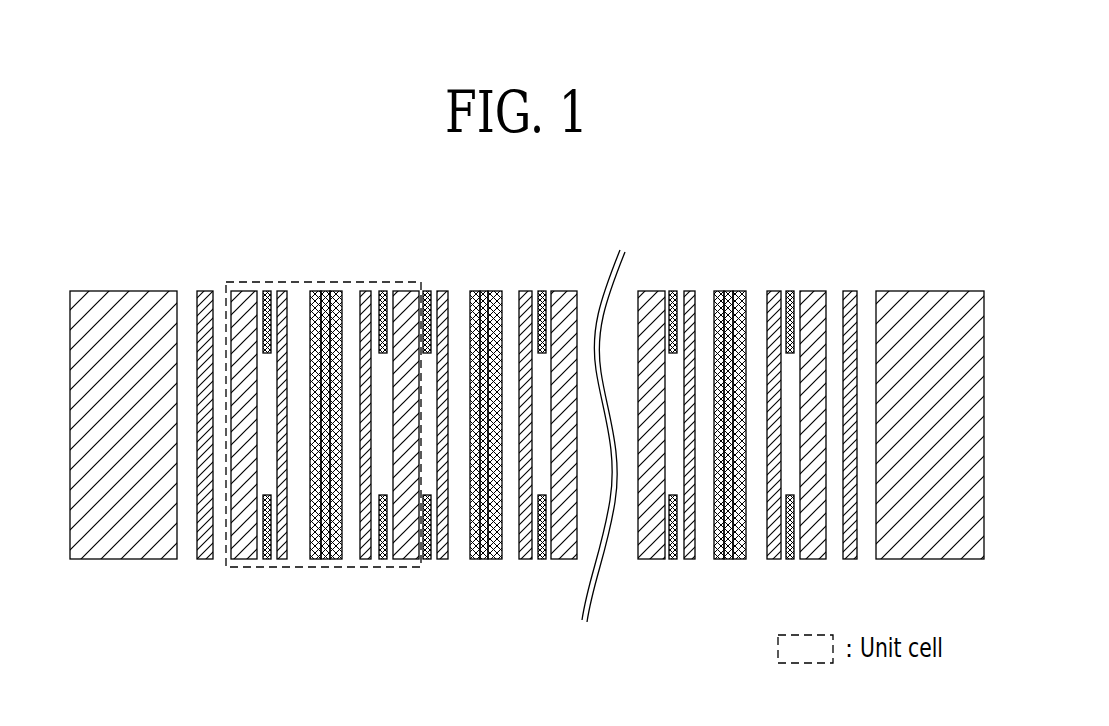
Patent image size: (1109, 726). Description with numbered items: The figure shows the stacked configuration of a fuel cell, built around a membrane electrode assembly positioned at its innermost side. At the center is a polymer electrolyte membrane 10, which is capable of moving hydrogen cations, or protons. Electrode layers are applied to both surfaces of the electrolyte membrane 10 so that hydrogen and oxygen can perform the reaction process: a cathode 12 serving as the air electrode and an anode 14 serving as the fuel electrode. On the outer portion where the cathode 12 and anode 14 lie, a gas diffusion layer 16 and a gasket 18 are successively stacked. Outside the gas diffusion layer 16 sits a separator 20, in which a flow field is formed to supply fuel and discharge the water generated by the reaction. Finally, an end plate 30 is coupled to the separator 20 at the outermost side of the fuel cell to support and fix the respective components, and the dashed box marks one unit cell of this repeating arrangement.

The polymer electrolyte membrane 10 is at (327, 560).
The cathode 12 is at (333, 560).
The anode 14 is at (317, 560).
The gas diffusion layer 16 is at (282, 291).
The gasket 18 is at (264, 291).
The separator 20 is at (247, 560).
The end plate 30 is at (127, 291).